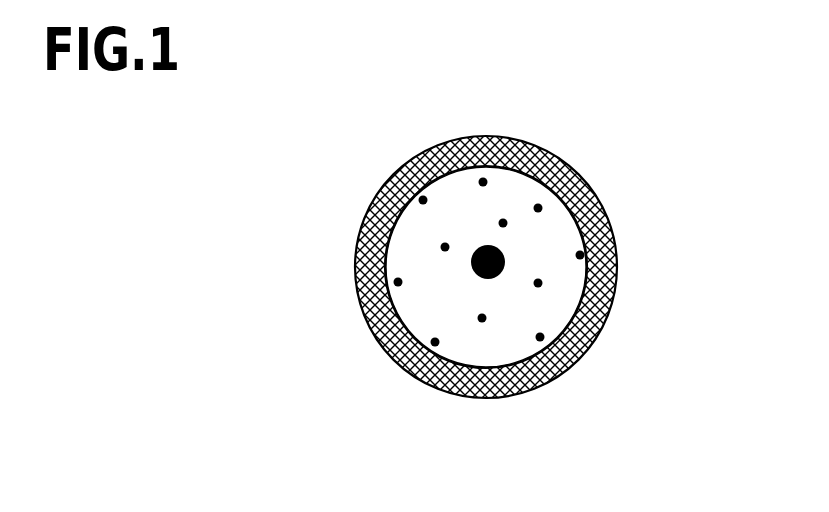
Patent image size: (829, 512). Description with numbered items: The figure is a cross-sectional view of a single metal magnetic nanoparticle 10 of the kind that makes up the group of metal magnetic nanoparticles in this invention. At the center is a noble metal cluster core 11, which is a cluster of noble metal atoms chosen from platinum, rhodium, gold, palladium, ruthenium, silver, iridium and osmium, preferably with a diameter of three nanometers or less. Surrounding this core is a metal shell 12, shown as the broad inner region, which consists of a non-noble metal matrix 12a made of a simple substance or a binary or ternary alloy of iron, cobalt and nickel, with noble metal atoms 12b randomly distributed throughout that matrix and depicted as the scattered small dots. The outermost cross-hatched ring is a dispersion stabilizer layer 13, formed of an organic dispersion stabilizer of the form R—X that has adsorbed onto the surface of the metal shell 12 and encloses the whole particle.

The metal magnetic nanoparticle 10 is at (578, 104).
The noble metal cluster core 11 is at (505, 262).
The metal shell 12 is at (488, 338).
The non-noble metal matrix 12a is at (508, 198).
The noble metal atoms 12b is at (538, 208).
The dispersion stabilizer layer 13 is at (393, 205).